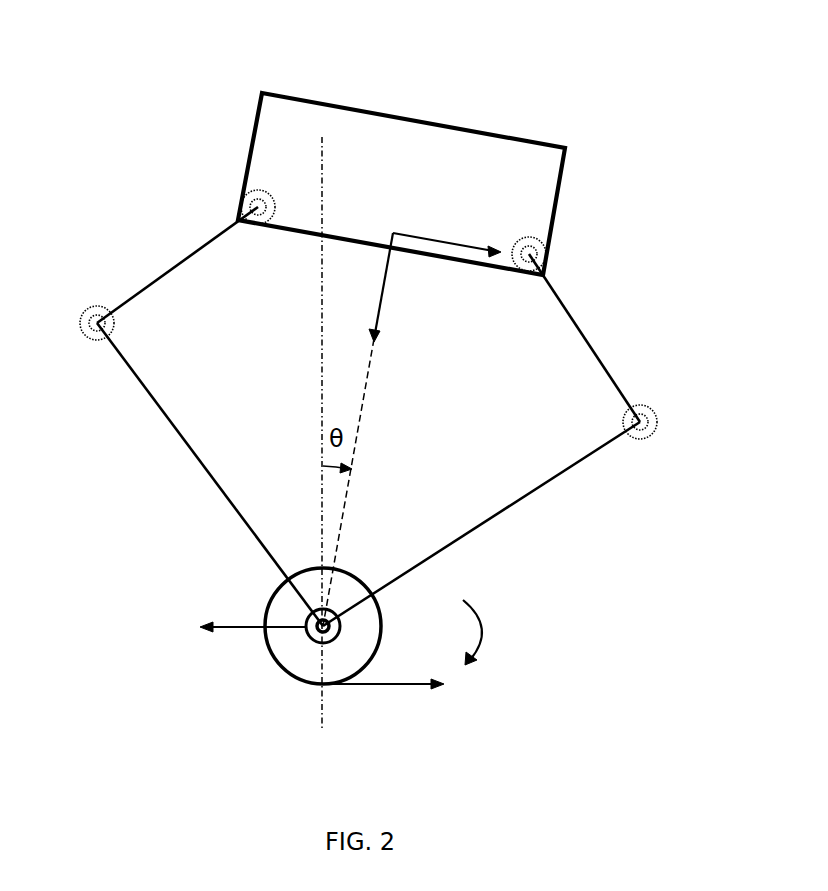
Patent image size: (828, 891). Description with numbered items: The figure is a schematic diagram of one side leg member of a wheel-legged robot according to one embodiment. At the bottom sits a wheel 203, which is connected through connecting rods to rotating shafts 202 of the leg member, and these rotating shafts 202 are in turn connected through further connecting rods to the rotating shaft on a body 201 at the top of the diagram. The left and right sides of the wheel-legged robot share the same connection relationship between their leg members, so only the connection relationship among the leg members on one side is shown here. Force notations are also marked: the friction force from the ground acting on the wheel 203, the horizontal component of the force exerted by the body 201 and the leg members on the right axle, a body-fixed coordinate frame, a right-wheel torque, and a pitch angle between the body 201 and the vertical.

The body 201 is at (405, 165).
The rotating shafts 202 is at (643, 432).
The wheel 203 is at (287, 642).